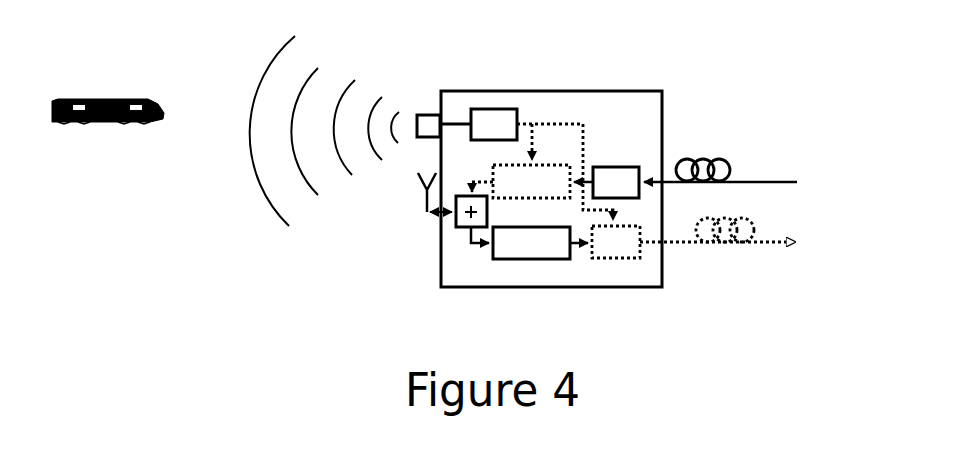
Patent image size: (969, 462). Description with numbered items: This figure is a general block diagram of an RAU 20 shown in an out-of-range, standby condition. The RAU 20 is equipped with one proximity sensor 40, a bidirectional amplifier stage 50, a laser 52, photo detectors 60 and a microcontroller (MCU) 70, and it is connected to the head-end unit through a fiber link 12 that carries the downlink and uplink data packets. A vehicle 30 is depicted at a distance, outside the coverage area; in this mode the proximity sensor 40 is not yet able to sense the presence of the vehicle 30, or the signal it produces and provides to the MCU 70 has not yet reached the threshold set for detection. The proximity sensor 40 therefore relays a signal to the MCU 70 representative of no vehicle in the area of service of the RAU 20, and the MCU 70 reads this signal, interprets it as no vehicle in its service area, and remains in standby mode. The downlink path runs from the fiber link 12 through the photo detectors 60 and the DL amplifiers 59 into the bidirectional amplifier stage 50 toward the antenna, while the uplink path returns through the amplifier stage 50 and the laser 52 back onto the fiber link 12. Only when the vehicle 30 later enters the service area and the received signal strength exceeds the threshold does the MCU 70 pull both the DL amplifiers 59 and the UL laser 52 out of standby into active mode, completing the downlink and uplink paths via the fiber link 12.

The fiber link 12 is at (818, 168).
The RAU 20 is at (399, 306).
The vehicle 30 is at (101, 99).
The proximity sensor 40 is at (423, 127).
The bidirectional amplifier stage 50 is at (573, 292).
The laser 52 is at (618, 260).
The DL amplifiers 59 is at (547, 183).
The photo detectors 60 is at (620, 183).
The microcontroller (MCU) 70 is at (497, 127).